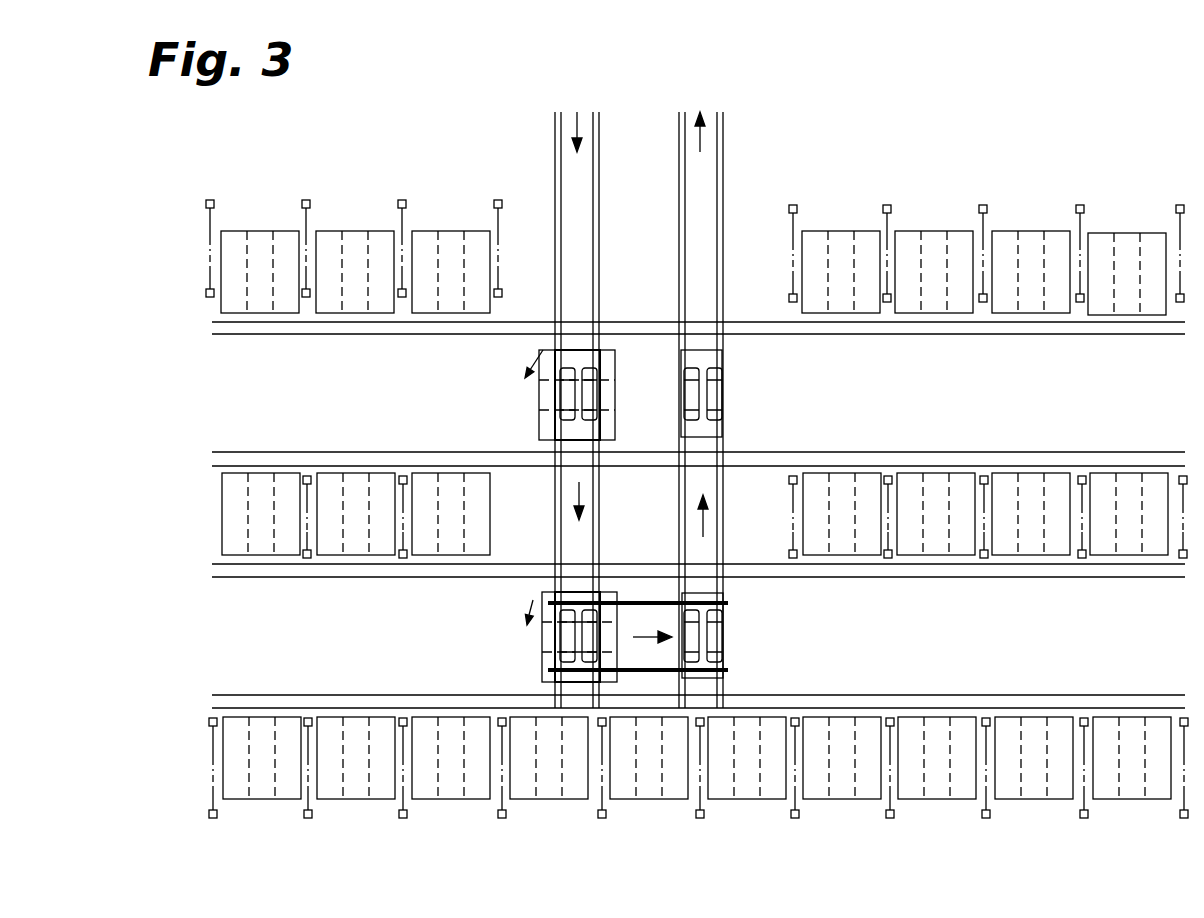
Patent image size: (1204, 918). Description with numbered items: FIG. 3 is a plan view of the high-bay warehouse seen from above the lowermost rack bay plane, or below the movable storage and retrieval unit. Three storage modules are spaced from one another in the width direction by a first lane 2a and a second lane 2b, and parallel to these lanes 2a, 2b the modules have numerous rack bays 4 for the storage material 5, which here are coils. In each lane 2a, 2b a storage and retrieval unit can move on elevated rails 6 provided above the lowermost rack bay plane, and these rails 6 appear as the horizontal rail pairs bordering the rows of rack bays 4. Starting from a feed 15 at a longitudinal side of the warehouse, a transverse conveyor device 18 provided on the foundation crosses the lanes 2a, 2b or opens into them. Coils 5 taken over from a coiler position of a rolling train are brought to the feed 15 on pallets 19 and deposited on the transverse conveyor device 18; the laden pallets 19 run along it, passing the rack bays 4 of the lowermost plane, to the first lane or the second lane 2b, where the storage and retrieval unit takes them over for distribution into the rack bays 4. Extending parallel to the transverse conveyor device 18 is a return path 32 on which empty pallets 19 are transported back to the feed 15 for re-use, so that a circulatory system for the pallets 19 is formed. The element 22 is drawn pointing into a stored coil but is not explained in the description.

The first lane 2a is at (1141, 407).
The second lane 2b is at (1139, 651).
The rack bay 4 is at (1083, 232).
The storage material (coils) 5 is at (958, 247).
The elevated rails 6 is at (451, 458).
The feed 15 is at (592, 84).
The transverse conveyor device 18 is at (555, 183).
The pallet 19 is at (590, 393).
The load unit 22 is at (847, 245).
The return path 32 is at (724, 187).